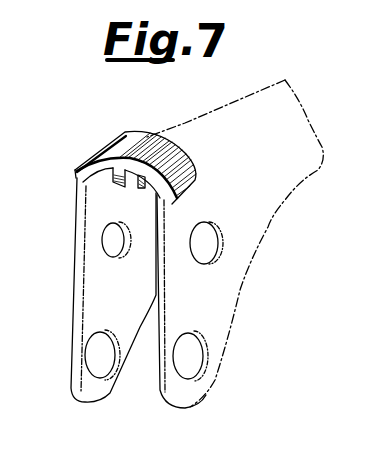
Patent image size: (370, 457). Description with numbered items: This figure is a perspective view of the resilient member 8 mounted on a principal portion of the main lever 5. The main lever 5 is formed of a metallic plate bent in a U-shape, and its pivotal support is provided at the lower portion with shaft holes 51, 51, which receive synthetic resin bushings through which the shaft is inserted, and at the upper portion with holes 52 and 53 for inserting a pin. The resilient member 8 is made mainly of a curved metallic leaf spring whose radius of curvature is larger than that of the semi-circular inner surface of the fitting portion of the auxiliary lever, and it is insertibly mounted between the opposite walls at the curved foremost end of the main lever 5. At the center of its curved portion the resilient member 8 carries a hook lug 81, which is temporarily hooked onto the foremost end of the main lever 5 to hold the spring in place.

The main lever 5 is at (295, 177).
The resilient member 8 is at (142, 133).
The hook lug 81 is at (122, 187).
The shaft hole 51 is at (208, 362).
The hole 52 is at (107, 233).
The hole 53 is at (218, 257).